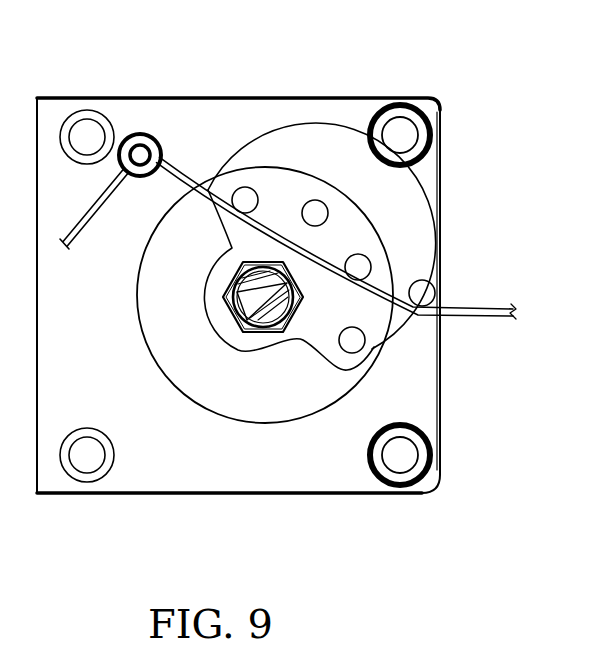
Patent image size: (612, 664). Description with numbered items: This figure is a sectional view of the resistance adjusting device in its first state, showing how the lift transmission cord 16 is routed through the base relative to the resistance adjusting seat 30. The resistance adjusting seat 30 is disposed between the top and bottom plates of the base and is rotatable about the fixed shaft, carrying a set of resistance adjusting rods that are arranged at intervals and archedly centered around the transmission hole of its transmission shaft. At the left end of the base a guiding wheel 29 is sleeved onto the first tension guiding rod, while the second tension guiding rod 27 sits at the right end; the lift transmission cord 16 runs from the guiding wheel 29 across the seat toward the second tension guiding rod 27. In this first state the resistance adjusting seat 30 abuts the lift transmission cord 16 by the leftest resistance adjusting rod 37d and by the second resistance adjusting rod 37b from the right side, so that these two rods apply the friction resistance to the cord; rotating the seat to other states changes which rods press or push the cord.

The lift transmission cord 16 is at (193, 170).
The second tension guiding rod 27 is at (428, 292).
The guiding wheel 29 is at (135, 142).
The resistance adjusting seat 30 is at (248, 375).
The resistance adjusting rod 37b is at (365, 262).
The resistance adjusting rod 37d is at (247, 193).